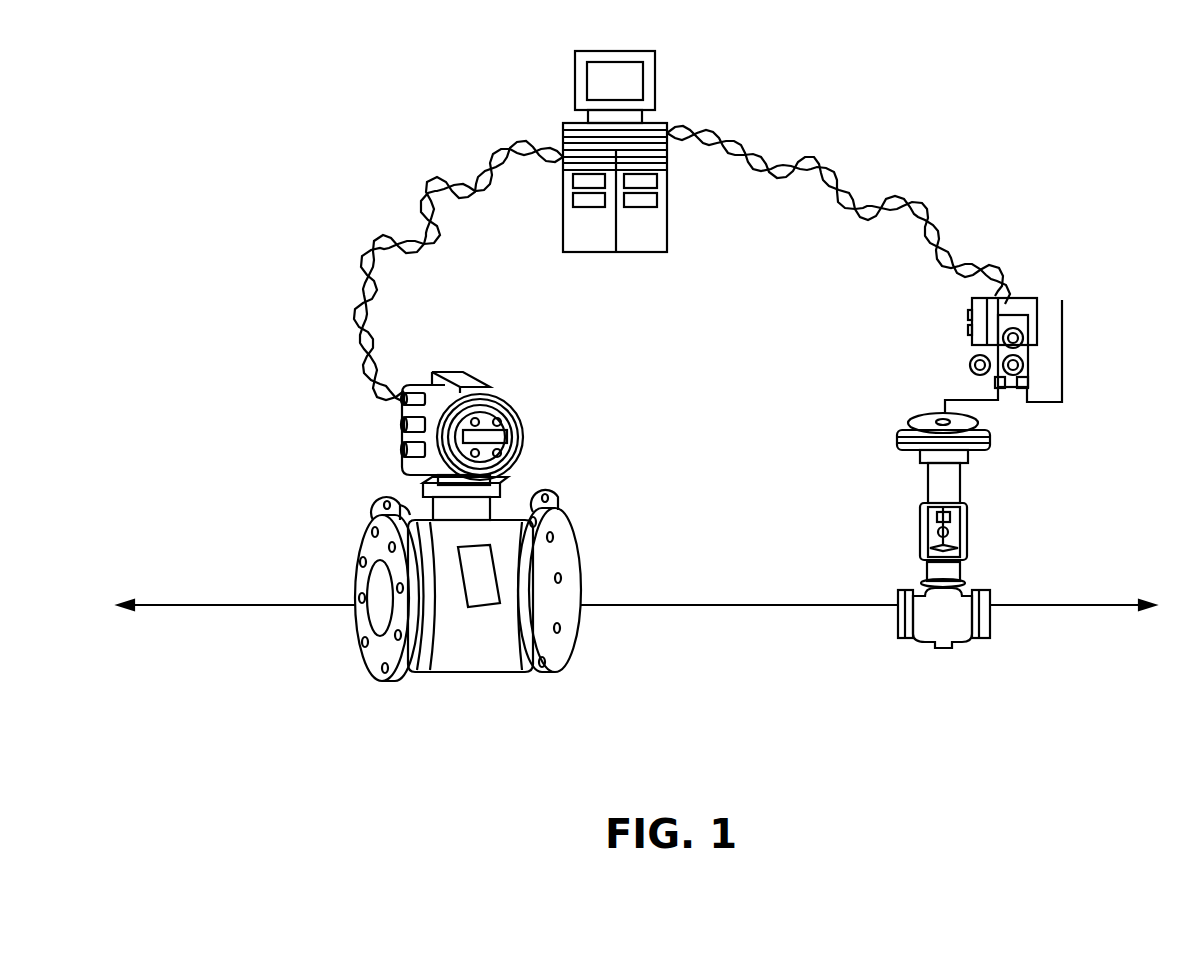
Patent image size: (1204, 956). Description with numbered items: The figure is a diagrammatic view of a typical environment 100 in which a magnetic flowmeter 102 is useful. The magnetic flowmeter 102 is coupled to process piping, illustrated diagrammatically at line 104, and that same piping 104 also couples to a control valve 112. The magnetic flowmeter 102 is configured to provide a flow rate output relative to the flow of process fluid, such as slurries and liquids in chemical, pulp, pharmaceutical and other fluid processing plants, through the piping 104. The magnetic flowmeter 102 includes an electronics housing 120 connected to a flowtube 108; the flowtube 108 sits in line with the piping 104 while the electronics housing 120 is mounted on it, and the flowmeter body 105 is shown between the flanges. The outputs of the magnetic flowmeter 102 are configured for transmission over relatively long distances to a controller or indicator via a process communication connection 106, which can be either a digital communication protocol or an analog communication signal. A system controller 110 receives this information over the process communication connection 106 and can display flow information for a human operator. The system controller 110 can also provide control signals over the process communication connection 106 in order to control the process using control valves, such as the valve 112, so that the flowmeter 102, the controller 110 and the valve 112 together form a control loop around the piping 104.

The environment 100 is at (968, 126).
The magnetic flowmeter 102 is at (638, 460).
The process piping 104 is at (683, 607).
The flow meter body 105 is at (470, 652).
The process communication connection 106 is at (440, 187).
The flowtube 108 is at (360, 641).
The system controller 110 is at (657, 71).
The control valve 112 is at (962, 477).
The electronics housing 120 is at (503, 395).